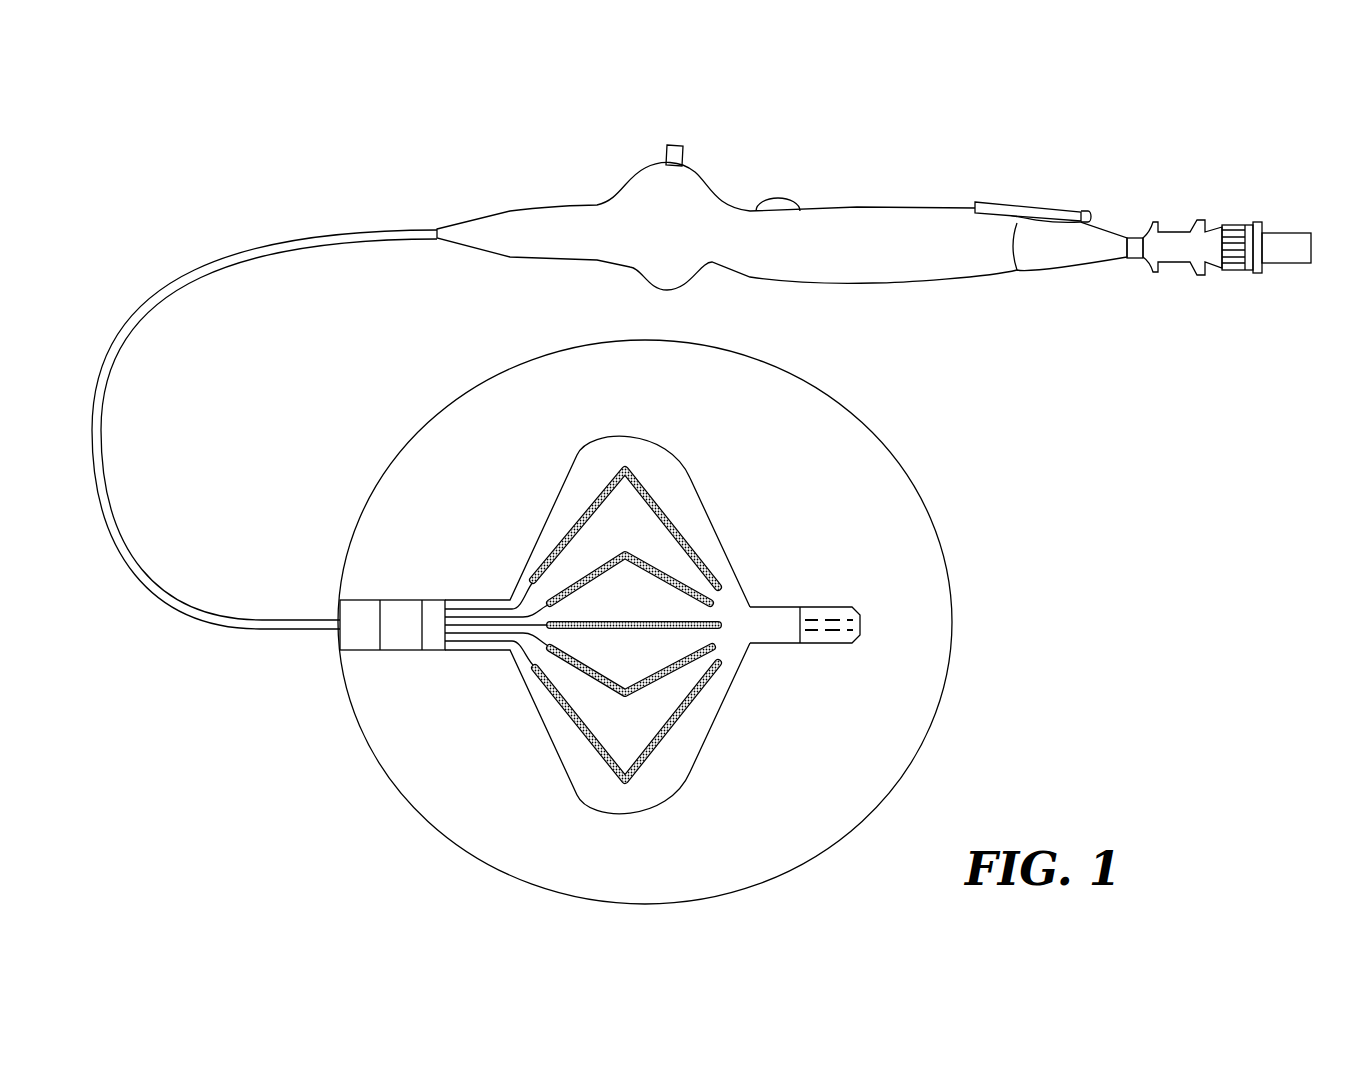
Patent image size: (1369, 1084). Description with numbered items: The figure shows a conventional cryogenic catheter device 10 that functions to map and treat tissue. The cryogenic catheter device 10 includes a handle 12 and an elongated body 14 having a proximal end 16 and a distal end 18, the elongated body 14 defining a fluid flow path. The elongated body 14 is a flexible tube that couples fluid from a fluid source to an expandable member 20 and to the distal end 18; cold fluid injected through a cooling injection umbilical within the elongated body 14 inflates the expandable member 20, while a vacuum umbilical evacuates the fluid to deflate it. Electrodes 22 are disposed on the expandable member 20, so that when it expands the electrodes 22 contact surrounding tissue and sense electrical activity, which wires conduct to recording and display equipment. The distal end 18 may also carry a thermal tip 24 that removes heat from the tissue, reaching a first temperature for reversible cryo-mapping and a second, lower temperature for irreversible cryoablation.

The cryogenic catheter device 10 is at (843, 142).
The handle 12 is at (1040, 207).
The elongated body 14 is at (174, 269).
The proximal end 16 is at (436, 229).
The distal end 18 is at (856, 642).
The expandable member 20 is at (677, 460).
The electrodes 22 is at (718, 578).
The thermal tip 24 is at (858, 626).